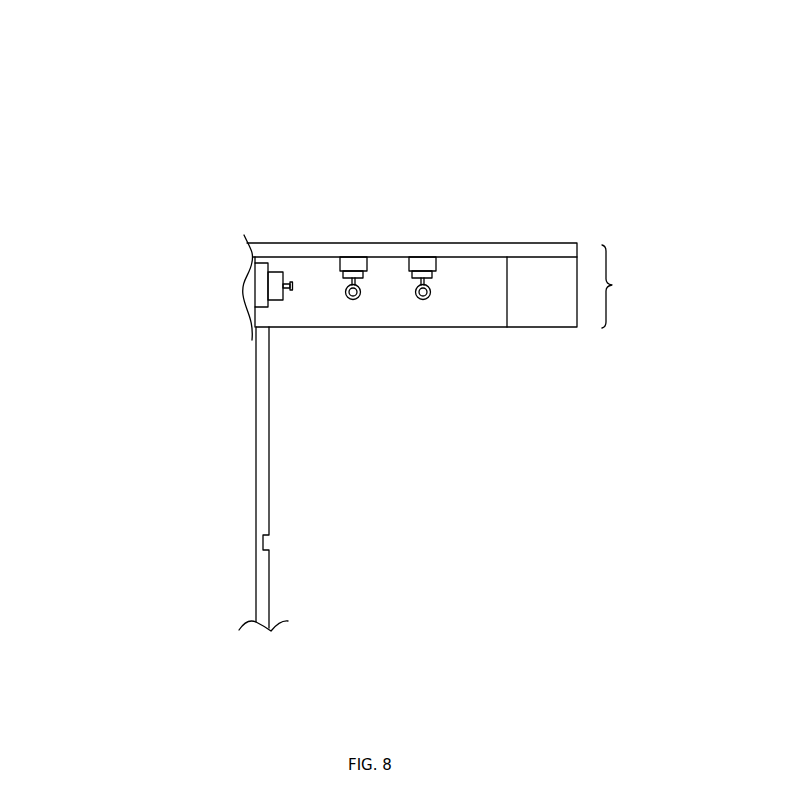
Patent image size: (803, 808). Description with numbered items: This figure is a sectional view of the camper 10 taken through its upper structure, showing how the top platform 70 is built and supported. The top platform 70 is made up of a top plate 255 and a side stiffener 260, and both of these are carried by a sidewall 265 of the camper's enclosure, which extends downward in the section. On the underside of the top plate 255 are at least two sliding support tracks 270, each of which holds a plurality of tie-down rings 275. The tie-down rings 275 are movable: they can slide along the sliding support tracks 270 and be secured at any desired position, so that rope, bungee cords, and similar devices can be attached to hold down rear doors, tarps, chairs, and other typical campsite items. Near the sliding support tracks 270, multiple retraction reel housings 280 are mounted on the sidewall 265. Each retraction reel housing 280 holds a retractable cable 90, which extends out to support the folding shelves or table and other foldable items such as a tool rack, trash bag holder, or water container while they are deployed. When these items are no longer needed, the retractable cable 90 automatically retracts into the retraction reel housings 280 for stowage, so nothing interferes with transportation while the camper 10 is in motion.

The camper 10 is at (101, 152).
The top platform 70 is at (618, 285).
The retractable cable 90 is at (291, 280).
The top plate 255 is at (543, 248).
The side stiffener 260 is at (528, 317).
The sidewall 265 is at (268, 583).
The sliding support tracks 270 is at (357, 263).
The tie-down rings 275 is at (353, 302).
The retraction reel housings 280 is at (280, 300).